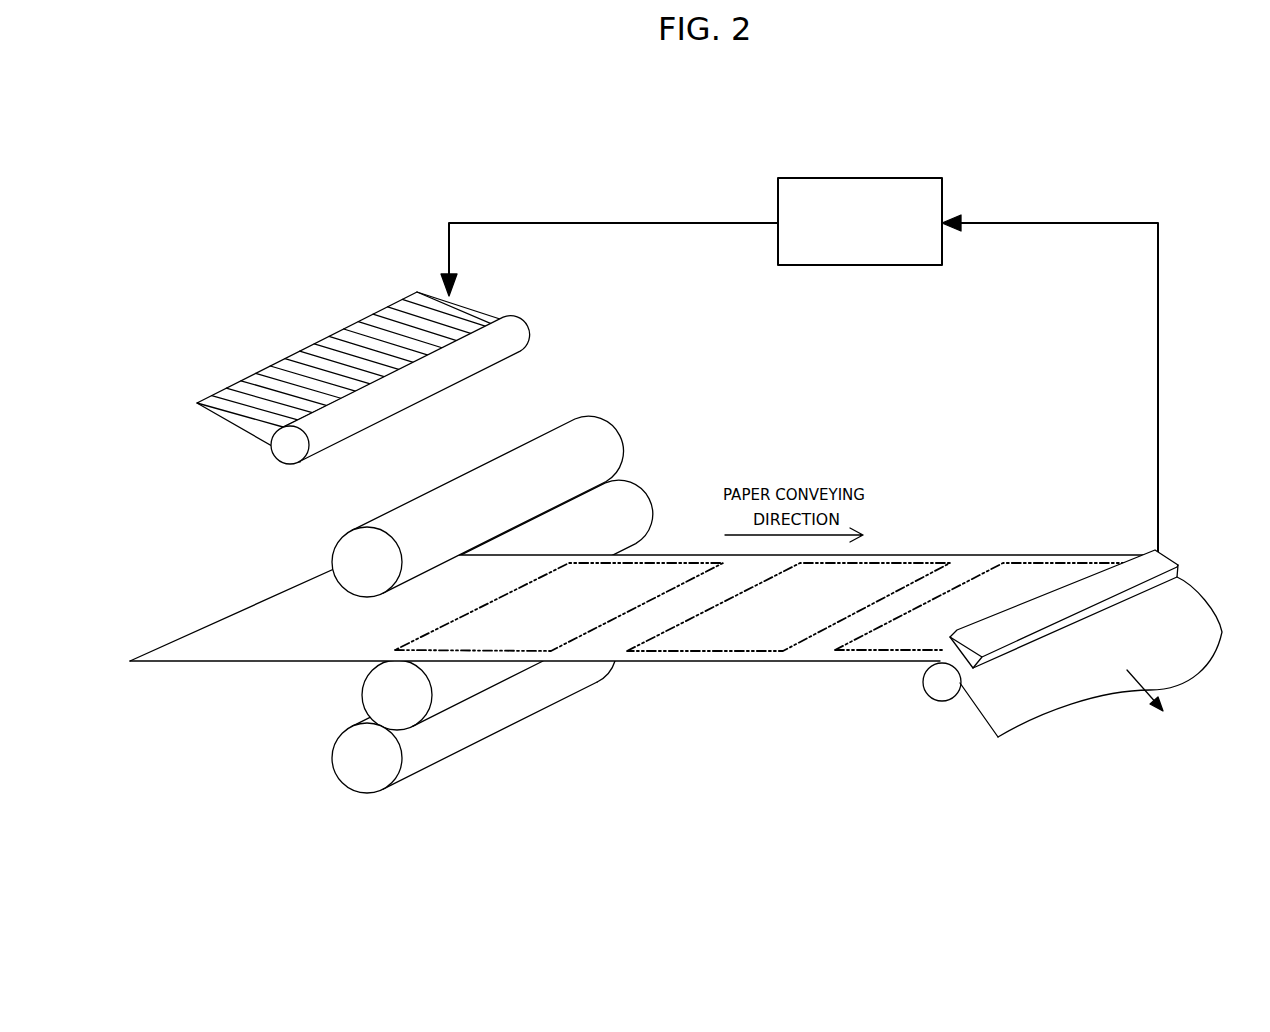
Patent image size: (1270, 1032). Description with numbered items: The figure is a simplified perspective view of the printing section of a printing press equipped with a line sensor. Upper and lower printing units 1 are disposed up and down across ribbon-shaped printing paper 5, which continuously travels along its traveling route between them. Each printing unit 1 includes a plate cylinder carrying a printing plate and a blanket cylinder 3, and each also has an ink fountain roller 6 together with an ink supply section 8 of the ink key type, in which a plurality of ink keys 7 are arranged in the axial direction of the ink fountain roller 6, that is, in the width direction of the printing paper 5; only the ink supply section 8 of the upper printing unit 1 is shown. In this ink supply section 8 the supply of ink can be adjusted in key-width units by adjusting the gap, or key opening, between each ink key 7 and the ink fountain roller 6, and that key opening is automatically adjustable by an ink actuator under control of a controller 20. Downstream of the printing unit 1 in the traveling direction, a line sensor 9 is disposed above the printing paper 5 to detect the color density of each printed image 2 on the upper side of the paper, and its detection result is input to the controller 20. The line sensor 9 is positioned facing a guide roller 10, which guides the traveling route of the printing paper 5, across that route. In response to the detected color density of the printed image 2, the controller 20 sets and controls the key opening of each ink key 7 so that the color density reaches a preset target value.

The printing unit 1 is at (651, 379).
The printed image 2 is at (893, 563).
The blanket cylinder 3 is at (636, 511).
The printing paper 5 is at (252, 652).
The ink fountain roller 6 is at (511, 336).
The ink key 7 is at (363, 318).
The ink supply section 8 is at (241, 367).
The line sensor 9 is at (1172, 560).
The guide roller 10 is at (935, 693).
The controller 20 is at (945, 186).